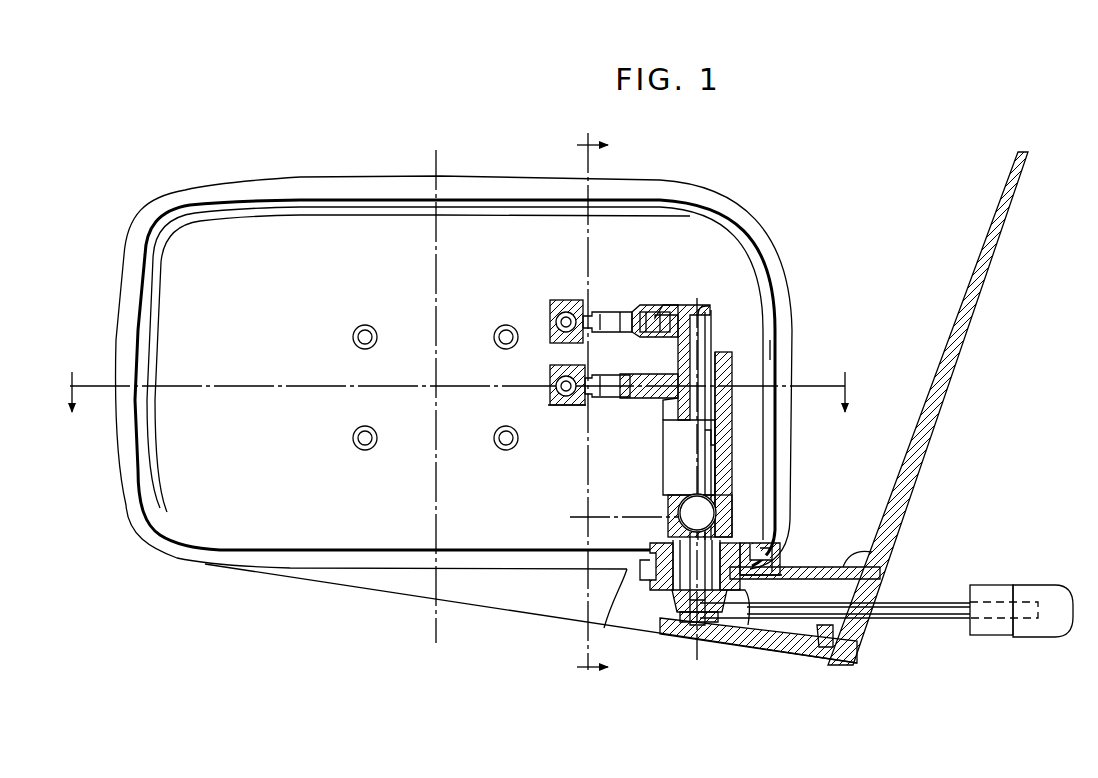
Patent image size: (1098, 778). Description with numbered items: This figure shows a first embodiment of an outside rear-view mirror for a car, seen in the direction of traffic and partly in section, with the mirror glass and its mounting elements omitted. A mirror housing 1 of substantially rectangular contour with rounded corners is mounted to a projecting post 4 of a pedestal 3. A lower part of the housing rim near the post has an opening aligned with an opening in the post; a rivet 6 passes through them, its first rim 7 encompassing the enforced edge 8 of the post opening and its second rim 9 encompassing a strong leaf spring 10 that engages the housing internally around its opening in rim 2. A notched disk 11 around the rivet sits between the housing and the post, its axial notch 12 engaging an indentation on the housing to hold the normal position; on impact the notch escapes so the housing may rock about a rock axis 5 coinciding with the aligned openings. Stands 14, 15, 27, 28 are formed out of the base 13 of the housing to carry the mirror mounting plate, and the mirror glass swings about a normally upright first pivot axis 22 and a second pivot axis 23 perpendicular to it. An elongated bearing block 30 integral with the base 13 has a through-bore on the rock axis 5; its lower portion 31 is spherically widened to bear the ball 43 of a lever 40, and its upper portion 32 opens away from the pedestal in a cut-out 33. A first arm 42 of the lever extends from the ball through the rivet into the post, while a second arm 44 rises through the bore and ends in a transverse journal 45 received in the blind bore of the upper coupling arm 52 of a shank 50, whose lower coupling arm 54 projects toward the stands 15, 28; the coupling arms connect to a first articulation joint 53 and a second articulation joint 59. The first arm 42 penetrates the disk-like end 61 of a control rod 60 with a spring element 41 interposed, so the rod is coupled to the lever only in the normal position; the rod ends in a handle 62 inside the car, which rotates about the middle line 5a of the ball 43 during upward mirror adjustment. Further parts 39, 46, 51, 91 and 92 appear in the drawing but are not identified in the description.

The mirror housing 1 is at (754, 184).
The rim 2 is at (378, 590).
The pedestal 3 is at (980, 252).
The post 4 is at (866, 554).
The rock axis 5 is at (700, 290).
The middle line of ball 5a is at (570, 518).
The rivet 6 is at (744, 536).
The first rim 7 is at (745, 632).
The enforced edge 8 is at (742, 592).
The second rim 9 is at (758, 546).
The leaf spring 10 is at (763, 554).
The notched disk 11 is at (822, 641).
The notch 12 is at (728, 640).
The base 13 is at (278, 360).
The stand 14 is at (360, 450).
The stand 15 is at (498, 450).
The first pivot axis 22 is at (436, 160).
The second pivot axis 23 is at (203, 383).
The stand 27 is at (362, 326).
The stand 28 is at (503, 326).
The bearing block 30 is at (738, 350).
The lower portion 31 is at (742, 470).
The upper portion 32 is at (770, 345).
The cut-out 33 is at (668, 406).
The lower bearing bracket 39 is at (662, 640).
The lever 40 is at (715, 443).
The spring element 41 is at (708, 646).
The first arm 42 is at (656, 610).
The ball 43 is at (718, 508).
The second arm 44 is at (707, 330).
The journal 45 is at (665, 305).
The ball joint 46 is at (690, 512).
The shank 50 is at (683, 296).
The pin head 51 is at (668, 366).
The upper coupling arm 52 is at (612, 312).
The first articulation joint 53 is at (552, 300).
The lower coupling arm 54 is at (612, 392).
The second articulation joint 59 is at (548, 408).
The control rod 60 is at (912, 620).
The disk-like end 61 is at (677, 646).
The handle 62 is at (998, 630).
The bearing ball 91 is at (556, 316).
The bearing block 92 is at (567, 300).